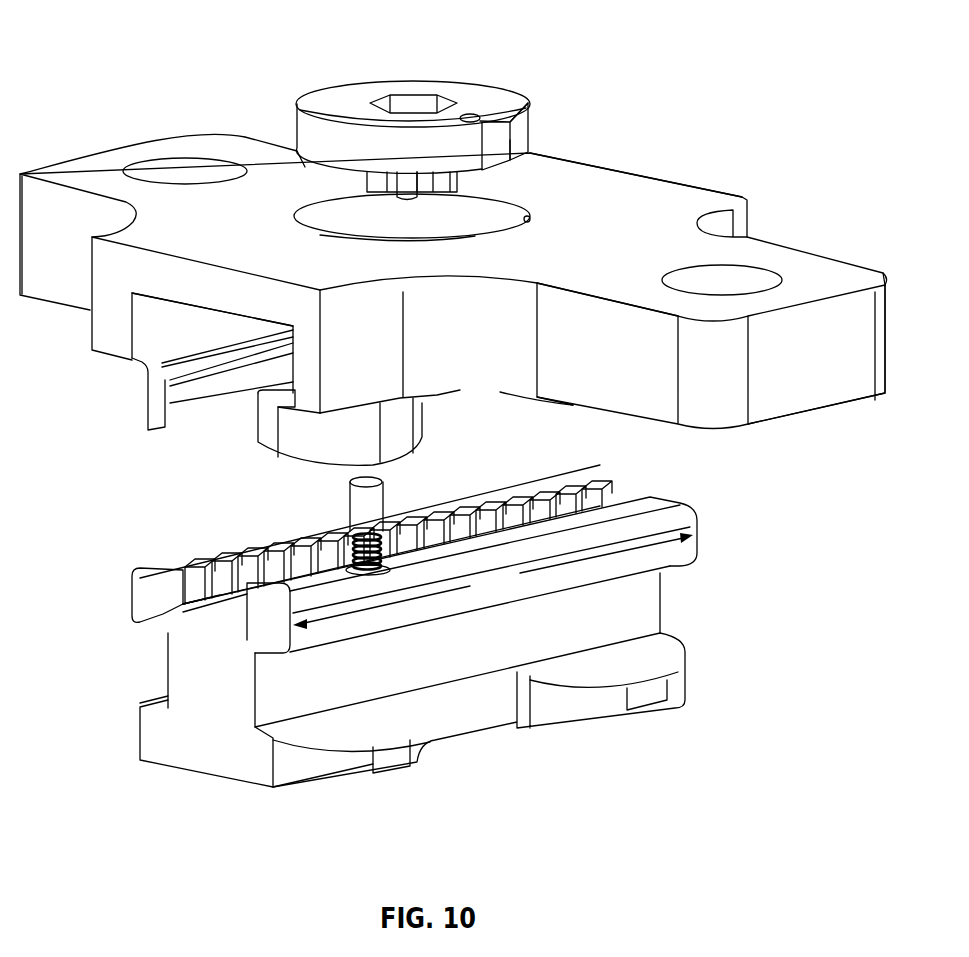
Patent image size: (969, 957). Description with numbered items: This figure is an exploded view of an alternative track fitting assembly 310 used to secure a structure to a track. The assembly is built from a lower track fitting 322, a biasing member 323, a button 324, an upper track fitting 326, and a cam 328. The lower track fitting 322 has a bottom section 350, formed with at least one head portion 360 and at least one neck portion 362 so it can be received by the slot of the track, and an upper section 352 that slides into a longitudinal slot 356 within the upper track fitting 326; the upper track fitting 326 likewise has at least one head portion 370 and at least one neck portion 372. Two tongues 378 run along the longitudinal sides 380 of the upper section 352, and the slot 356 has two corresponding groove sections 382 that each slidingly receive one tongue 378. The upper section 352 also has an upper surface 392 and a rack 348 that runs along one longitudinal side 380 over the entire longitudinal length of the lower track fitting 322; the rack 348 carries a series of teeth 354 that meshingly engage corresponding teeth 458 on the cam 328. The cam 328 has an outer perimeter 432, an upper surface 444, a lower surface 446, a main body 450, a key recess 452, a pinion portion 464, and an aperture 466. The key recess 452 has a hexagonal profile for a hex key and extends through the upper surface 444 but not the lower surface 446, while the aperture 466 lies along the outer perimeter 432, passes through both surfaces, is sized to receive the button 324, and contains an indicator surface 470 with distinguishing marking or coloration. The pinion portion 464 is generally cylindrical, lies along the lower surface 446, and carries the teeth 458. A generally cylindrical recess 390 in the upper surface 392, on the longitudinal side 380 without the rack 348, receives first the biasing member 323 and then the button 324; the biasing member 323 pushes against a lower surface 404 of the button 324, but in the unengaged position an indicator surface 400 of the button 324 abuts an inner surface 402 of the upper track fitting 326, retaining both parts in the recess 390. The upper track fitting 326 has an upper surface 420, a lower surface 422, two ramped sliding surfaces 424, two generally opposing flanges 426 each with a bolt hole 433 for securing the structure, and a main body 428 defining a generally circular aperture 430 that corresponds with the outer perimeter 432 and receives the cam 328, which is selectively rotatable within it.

The track fitting assembly 310 is at (652, 782).
The lower track fitting 322 is at (663, 612).
The biasing member 323 is at (360, 570).
The button 324 is at (350, 497).
The upper track fitting 326 is at (620, 170).
The cam 328 is at (397, 80).
The rack 348 is at (245, 544).
The bottom section 350 is at (705, 655).
The upper section 352 is at (708, 525).
The teeth 354 is at (197, 578).
The longitudinal slot 356 is at (137, 335).
The head portion 360 is at (643, 707).
The neck portion 362 is at (463, 730).
The head portion 370 is at (423, 428).
The neck portion 372 is at (463, 400).
The tongues 378 is at (128, 607).
The longitudinal side 380 is at (143, 587).
The groove sections 382 is at (133, 333).
The recess 390 is at (560, 476).
The upper surface 392 is at (176, 566).
The indicator surface 400 is at (383, 478).
The inner surface 402 is at (205, 300).
The lower surface 404 is at (352, 533).
The upper surface 420 is at (697, 197).
The lower surface 422 is at (763, 423).
The sliding surfaces 424 is at (133, 362).
The flanges 426 is at (87, 168).
The main body 428 is at (642, 230).
The aperture 430 is at (530, 221).
The outer perimeter 432 is at (528, 130).
The bolt hole 433 is at (185, 163).
The upper surface 444 is at (514, 100).
The lower surface 446 is at (305, 167).
The main body 450 is at (325, 114).
The key recess 452 is at (407, 100).
The teeth 458 is at (390, 194).
The pinion portion 464 is at (350, 178).
The aperture 466 is at (474, 115).
The indicator surface 470 is at (508, 122).